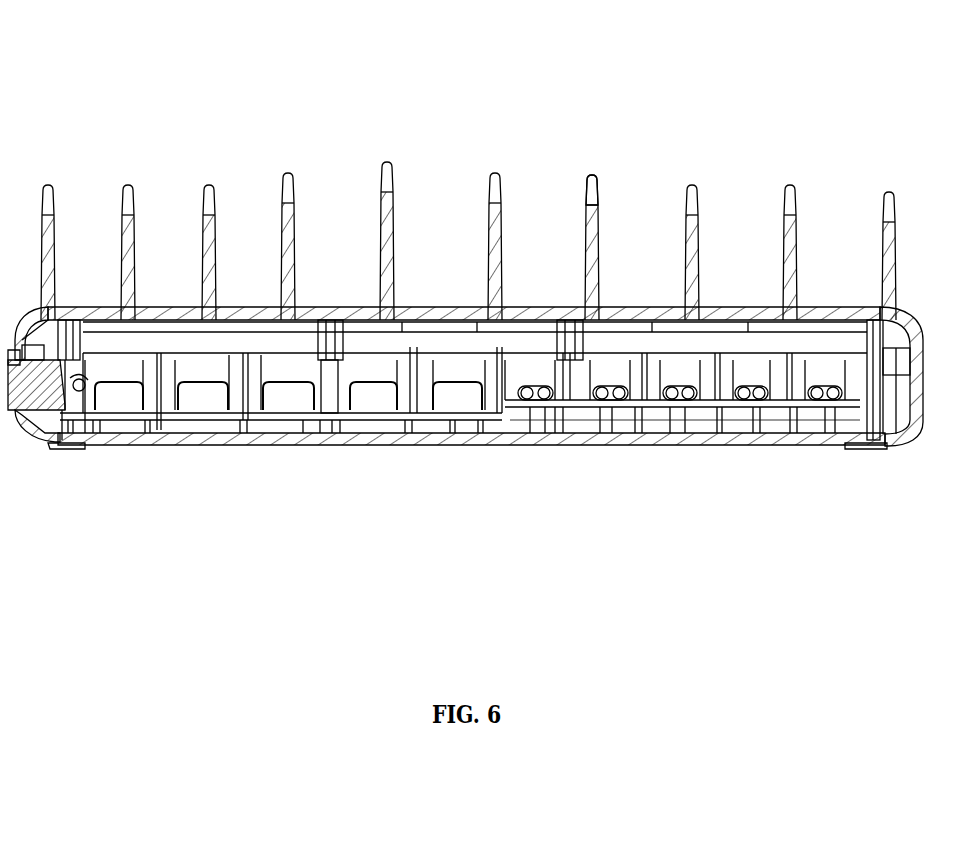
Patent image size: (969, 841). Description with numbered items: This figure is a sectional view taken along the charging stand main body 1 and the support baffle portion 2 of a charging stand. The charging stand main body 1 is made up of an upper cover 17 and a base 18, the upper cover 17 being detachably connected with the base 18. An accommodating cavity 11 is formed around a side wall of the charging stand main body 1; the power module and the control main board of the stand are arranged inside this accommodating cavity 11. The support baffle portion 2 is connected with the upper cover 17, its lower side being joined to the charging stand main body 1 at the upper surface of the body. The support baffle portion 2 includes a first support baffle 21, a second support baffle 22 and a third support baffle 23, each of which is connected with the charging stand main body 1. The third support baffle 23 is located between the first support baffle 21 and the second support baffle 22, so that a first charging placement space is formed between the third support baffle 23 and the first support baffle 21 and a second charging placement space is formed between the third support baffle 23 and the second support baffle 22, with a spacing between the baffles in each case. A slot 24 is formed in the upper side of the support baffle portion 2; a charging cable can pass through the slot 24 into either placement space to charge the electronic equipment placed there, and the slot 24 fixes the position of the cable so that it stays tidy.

The charging stand main body 1 is at (316, 458).
The support baffle portion 2 is at (468, 174).
The accommodating cavity 11 is at (465, 365).
The upper cover 17 is at (85, 317).
The base 18 is at (32, 410).
The first support baffle 21 is at (394, 230).
The second support baffle 22 is at (797, 240).
The third support baffle 23 is at (583, 174).
The slot 24 is at (588, 188).